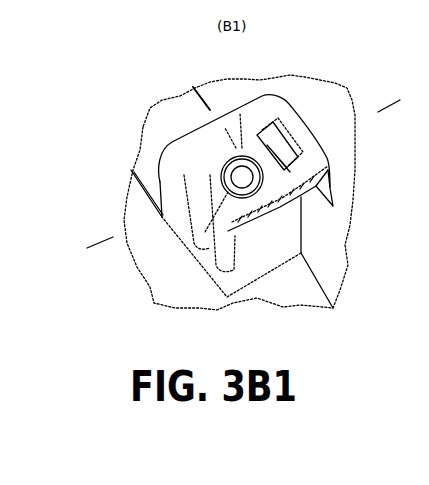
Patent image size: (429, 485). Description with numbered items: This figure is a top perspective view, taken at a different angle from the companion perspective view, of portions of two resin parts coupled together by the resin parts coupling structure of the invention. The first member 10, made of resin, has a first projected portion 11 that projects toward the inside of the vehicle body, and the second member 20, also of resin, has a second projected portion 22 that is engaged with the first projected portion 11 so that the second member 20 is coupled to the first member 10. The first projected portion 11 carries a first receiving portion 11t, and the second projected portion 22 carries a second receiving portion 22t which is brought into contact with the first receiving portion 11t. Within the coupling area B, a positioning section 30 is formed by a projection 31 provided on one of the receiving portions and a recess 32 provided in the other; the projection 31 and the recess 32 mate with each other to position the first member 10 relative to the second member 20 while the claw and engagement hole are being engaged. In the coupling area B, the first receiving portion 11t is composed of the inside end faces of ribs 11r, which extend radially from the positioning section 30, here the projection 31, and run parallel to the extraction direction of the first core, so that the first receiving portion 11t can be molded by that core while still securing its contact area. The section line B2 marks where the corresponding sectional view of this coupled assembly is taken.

The first member 10 is at (342, 252).
The first projected portion 11 is at (236, 178).
The ribs 11r is at (236, 148).
The first receiving portion 11t is at (198, 159).
The second projected portion 22 is at (333, 187).
The second receiving portion 22t is at (205, 175).
The second member 20 is at (145, 165).
The positioning section 30 is at (213, 159).
The projection 31 is at (224, 162).
The recess 32 is at (222, 178).
The coupling area B is at (290, 94).
The section line B2- B2 is at (98, 247).